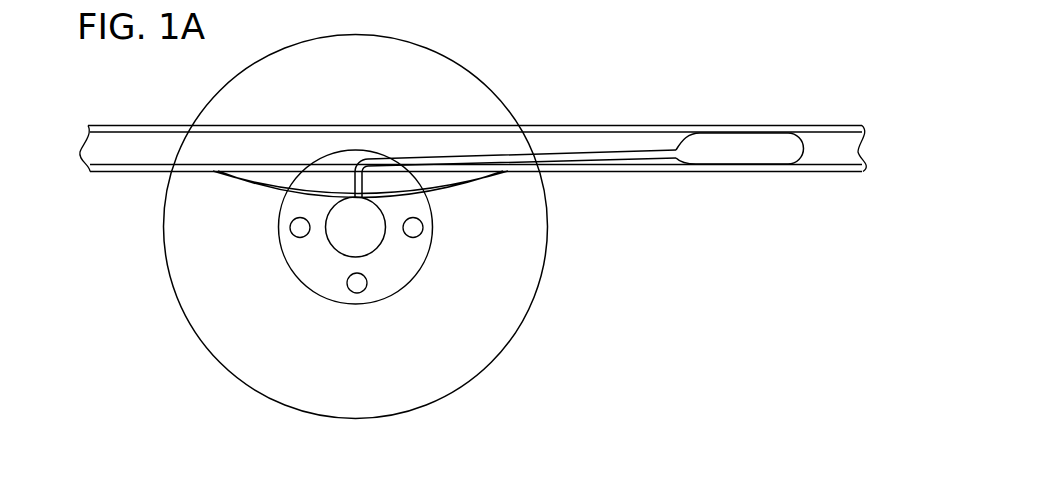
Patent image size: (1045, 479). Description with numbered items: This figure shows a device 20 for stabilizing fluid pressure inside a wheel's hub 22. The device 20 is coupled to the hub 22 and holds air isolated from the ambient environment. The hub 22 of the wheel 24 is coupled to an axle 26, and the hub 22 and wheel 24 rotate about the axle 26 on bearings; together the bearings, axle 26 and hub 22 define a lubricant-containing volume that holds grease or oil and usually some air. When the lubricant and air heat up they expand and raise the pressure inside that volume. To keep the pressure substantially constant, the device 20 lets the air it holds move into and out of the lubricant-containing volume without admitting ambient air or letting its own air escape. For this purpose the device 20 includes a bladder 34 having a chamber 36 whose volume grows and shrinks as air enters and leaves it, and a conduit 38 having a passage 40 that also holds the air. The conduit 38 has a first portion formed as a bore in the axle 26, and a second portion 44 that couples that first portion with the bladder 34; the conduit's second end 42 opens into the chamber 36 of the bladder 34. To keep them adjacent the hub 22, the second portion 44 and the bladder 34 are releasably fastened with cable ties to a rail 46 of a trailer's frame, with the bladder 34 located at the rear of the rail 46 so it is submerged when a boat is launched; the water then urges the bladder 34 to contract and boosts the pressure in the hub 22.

The device 20 is at (413, 127).
The hub 22 is at (333, 300).
The wheel 24 is at (536, 298).
The axle 26 is at (378, 249).
The bladder 34 is at (755, 152).
The chamber 36 is at (773, 152).
The conduit 38 is at (338, 178).
The passage 40 is at (608, 158).
The second end 42 is at (677, 160).
The second portion 44 is at (357, 160).
The rail 46 is at (700, 132).